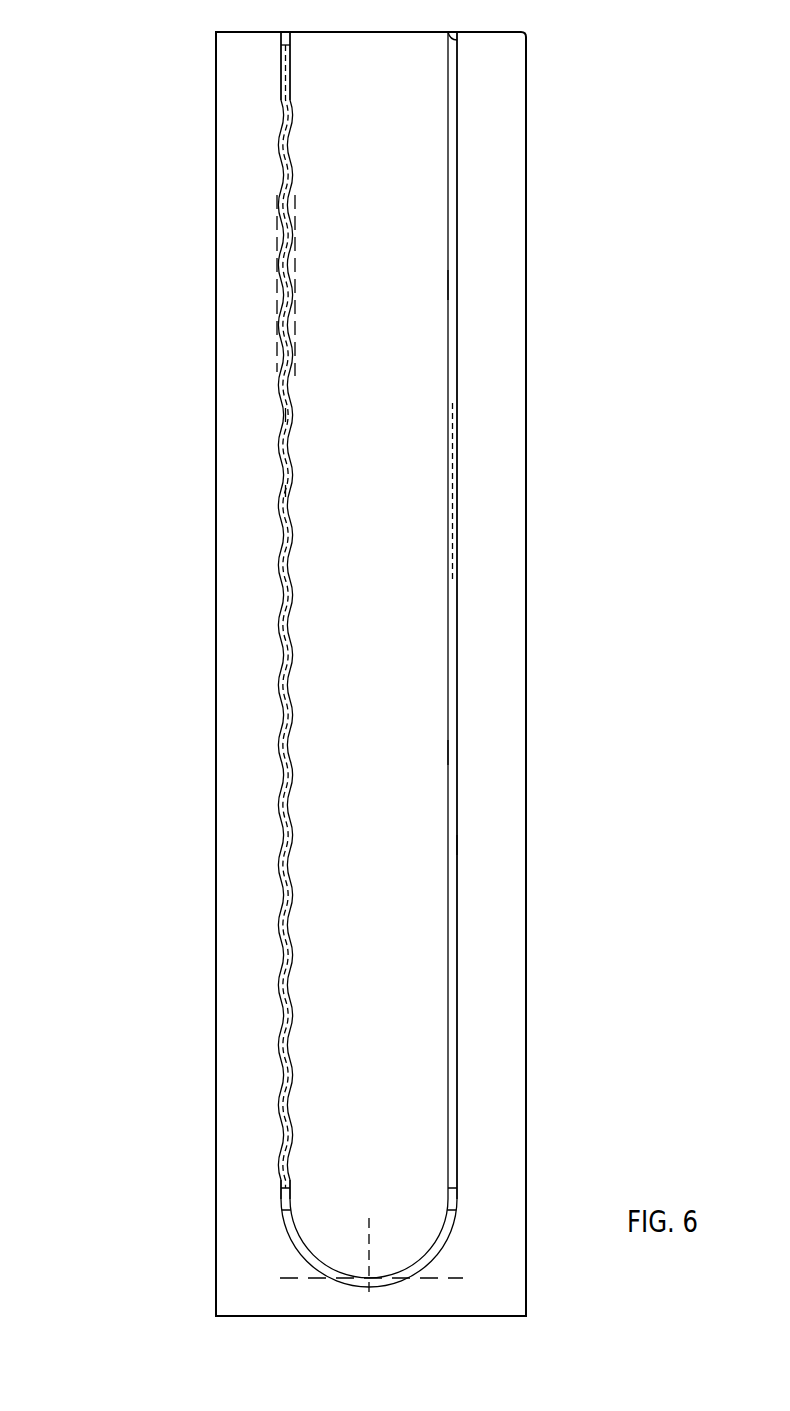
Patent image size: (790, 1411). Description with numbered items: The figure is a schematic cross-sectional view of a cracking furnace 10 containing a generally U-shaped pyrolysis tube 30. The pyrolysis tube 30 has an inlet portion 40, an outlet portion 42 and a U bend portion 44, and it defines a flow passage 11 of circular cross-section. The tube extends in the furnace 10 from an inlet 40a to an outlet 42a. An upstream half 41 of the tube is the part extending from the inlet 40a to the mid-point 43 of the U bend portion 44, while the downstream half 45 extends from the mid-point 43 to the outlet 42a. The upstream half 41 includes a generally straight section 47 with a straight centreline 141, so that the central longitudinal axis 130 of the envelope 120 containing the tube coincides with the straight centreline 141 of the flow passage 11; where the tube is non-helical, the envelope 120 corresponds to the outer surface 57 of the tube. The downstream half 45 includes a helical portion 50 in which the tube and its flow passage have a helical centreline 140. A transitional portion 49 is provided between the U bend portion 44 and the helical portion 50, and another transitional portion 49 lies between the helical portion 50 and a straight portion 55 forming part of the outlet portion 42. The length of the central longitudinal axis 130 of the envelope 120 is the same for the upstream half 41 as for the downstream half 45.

The furnace 10 is at (500, 655).
The flow passage 11 is at (453, 281).
The pyrolysis tube 30 is at (469, 390).
The inlet portion 40 is at (463, 54).
The inlet 40a is at (457, 40).
The upstream half 41 is at (459, 753).
The outlet portion 42 is at (270, 51).
The outlet 42a is at (285, 32).
The mid-point 43 is at (360, 1280).
The U bend portion 44 is at (440, 1258).
The downstream half 45 is at (282, 604).
The generally straight section 47 is at (458, 845).
The transitional portion 49 is at (280, 80).
The helical portion 50 is at (283, 707).
The straight portion 55 is at (290, 40).
The outer surface 57 is at (281, 491).
The envelope 120 is at (277, 223).
The central longitudinal axis 130 is at (283, 415).
The helical centreline 140 is at (280, 333).
The straight centreline 141 is at (460, 530).